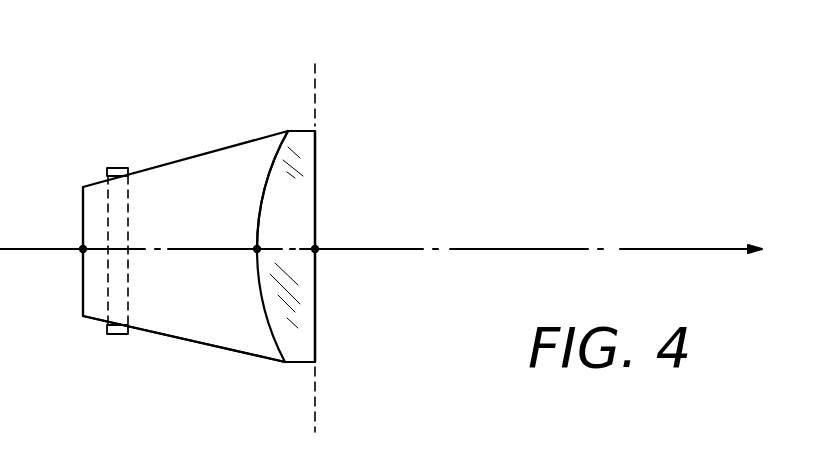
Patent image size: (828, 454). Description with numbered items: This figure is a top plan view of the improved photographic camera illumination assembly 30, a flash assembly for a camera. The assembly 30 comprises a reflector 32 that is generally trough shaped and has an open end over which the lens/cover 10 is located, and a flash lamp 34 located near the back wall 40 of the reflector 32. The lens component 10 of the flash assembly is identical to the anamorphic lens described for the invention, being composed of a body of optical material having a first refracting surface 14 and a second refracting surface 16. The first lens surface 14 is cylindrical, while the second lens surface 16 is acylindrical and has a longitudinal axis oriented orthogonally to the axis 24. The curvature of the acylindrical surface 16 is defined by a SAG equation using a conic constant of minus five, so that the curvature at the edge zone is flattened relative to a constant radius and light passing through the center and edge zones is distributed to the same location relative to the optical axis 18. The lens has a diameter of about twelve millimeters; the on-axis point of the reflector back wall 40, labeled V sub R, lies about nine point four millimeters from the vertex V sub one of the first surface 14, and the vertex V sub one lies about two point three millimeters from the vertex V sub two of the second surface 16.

The anamorphic lens 10 is at (322, 303).
The first refracting surface 14 is at (271, 165).
The second refracting surface 16 is at (316, 160).
The optical axis 18 is at (518, 248).
The axis 24 is at (310, 234).
The photographic camera illumination assembly 30 is at (152, 137).
The reflector 32 is at (195, 343).
The flash lamp 34 is at (114, 167).
The back wall 40 is at (83, 300).